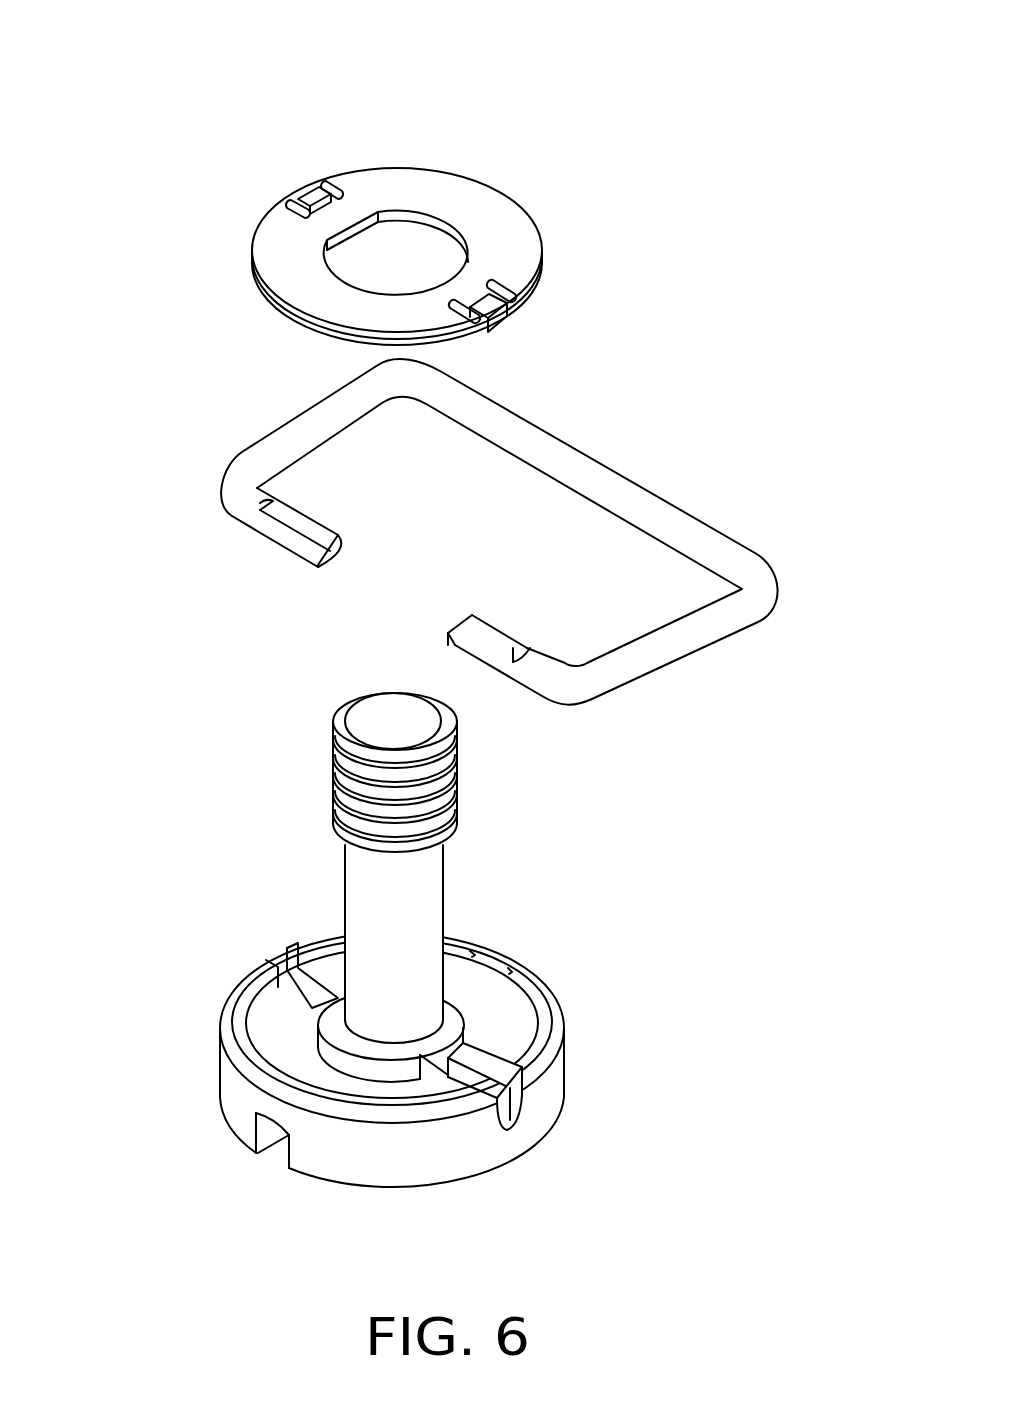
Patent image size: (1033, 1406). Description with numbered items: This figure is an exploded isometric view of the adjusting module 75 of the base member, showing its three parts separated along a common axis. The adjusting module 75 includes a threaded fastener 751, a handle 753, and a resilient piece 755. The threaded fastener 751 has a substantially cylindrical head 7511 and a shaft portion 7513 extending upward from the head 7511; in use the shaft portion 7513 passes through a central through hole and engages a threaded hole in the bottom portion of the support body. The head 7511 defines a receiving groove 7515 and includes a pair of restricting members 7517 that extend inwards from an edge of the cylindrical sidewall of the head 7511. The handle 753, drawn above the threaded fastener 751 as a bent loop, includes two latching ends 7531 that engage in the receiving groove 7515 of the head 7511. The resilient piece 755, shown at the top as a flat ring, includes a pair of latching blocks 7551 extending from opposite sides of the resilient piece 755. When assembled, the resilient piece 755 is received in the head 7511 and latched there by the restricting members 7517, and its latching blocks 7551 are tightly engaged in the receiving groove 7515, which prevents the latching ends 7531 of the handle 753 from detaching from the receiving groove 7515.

The adjusting module 75 is at (498, 70).
The resilient piece 755 is at (387, 240).
The latching blocks 7551 is at (303, 197).
The handle 753 is at (448, 532).
The latching ends 7531 is at (283, 515).
The threaded fastener 751 is at (293, 888).
The head 7511 is at (243, 1095).
The shaft portion 7513 is at (405, 888).
The receiving groove 7515 is at (512, 1110).
The restricting members 7517 is at (502, 963).